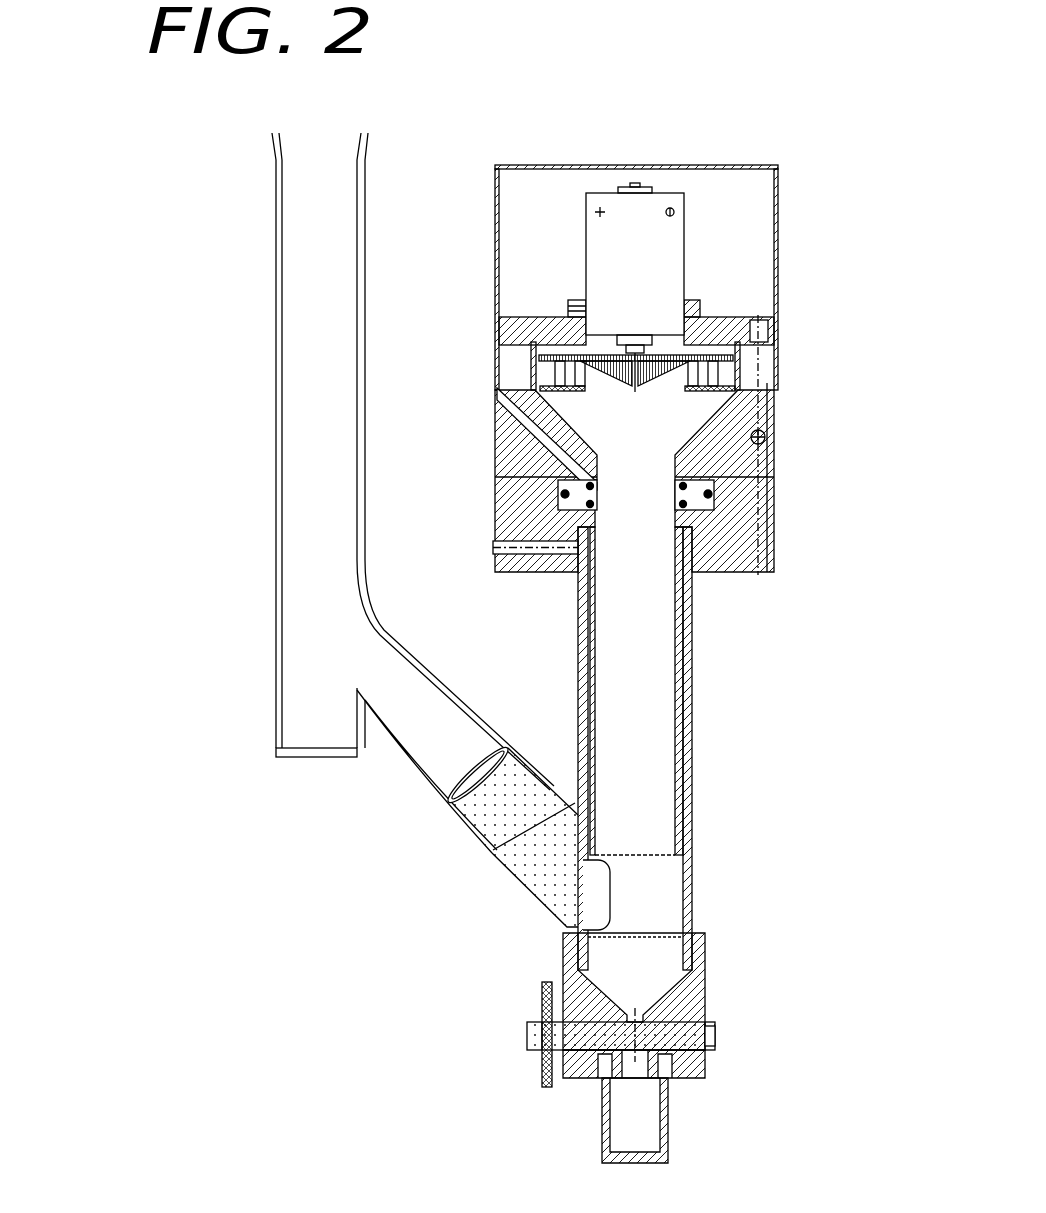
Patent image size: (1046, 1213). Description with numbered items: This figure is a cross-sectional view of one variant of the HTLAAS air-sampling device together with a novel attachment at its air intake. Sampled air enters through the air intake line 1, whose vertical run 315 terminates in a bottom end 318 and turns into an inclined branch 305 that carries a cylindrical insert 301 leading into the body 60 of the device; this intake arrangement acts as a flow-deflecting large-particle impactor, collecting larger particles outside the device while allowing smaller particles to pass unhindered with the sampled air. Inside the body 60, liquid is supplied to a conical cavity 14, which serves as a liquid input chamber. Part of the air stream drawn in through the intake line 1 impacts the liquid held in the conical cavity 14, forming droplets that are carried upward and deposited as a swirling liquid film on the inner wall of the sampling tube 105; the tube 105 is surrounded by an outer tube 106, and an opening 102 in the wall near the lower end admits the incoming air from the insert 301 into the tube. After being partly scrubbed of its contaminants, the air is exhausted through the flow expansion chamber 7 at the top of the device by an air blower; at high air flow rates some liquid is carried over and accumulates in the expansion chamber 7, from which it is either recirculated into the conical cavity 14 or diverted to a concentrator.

The air intake line 1 is at (295, 493).
The vertical pipe section 315 is at (202, 440).
The pipe end flange 318 is at (238, 774).
The inclined pipe section 305 is at (455, 706).
The cylindrical insert 301 is at (411, 866).
The mixing head housing 60 is at (691, 475).
The flow expansion chamber 7 is at (645, 520).
The sampling tube 105 is at (740, 691).
The outer tube 106 is at (729, 748).
The inlet window 102 is at (726, 909).
The conical cavity 14 is at (721, 1048).